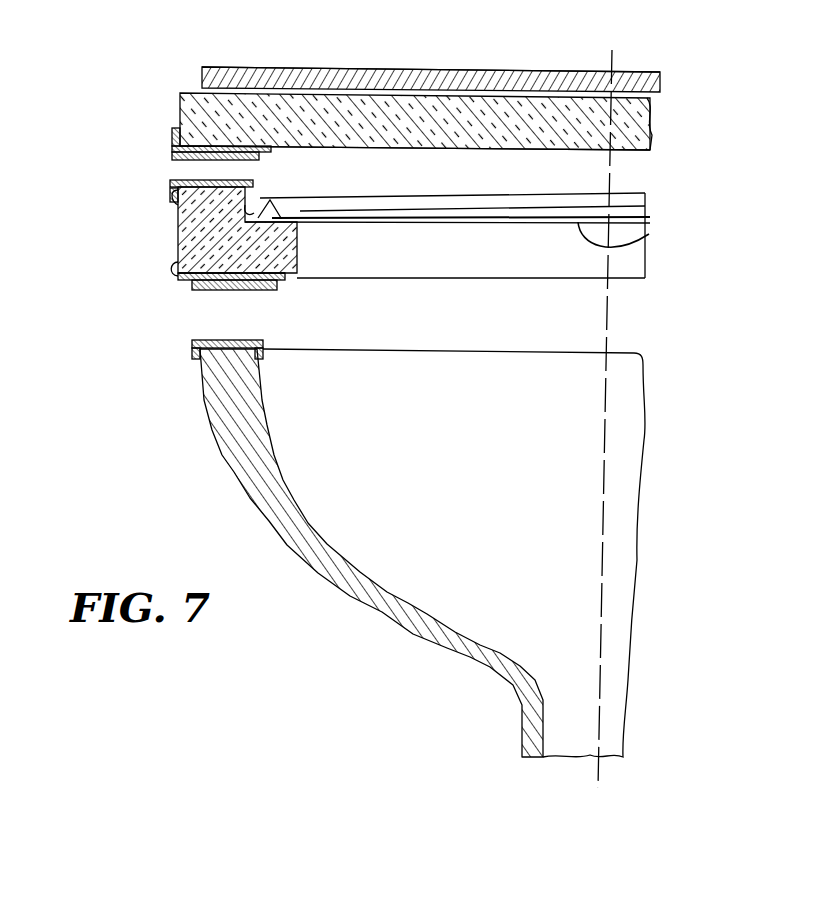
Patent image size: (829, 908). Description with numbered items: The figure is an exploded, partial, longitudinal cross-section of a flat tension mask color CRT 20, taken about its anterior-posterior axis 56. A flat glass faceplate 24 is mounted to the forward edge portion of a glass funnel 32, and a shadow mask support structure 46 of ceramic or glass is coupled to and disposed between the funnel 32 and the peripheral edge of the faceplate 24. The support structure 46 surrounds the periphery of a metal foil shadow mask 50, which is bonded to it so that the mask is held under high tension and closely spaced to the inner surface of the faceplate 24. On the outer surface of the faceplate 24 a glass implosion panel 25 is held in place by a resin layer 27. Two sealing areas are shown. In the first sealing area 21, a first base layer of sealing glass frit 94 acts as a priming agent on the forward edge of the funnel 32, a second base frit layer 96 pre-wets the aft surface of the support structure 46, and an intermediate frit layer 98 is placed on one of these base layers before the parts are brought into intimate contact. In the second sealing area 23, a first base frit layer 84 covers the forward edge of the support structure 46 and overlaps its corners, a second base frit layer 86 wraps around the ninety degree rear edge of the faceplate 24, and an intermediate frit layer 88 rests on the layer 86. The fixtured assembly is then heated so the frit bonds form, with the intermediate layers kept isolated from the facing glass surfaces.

The color CRT 20 is at (450, 46).
The first sealing area 21 is at (170, 268).
The second sealing area 23 is at (140, 115).
The flat faceplate 24 is at (655, 123).
The glass panel 25 is at (576, 70).
The resin layer 27 is at (202, 70).
The funnel 32 is at (413, 637).
The shadow mask support structure 46 is at (297, 246).
The metal foil shadow mask 50 is at (649, 236).
The anterior-posterior axis 56 is at (604, 445).
The first base frit layer 84 is at (253, 184).
The second base frit layer 86 is at (271, 150).
The intermediate frit layer 88 is at (176, 160).
The first base layer of sealing glass frit 94 is at (263, 356).
The second base layer of sealing glass frit 96 is at (278, 284).
The intermediate layer of sealing glass frit 98 is at (212, 290).